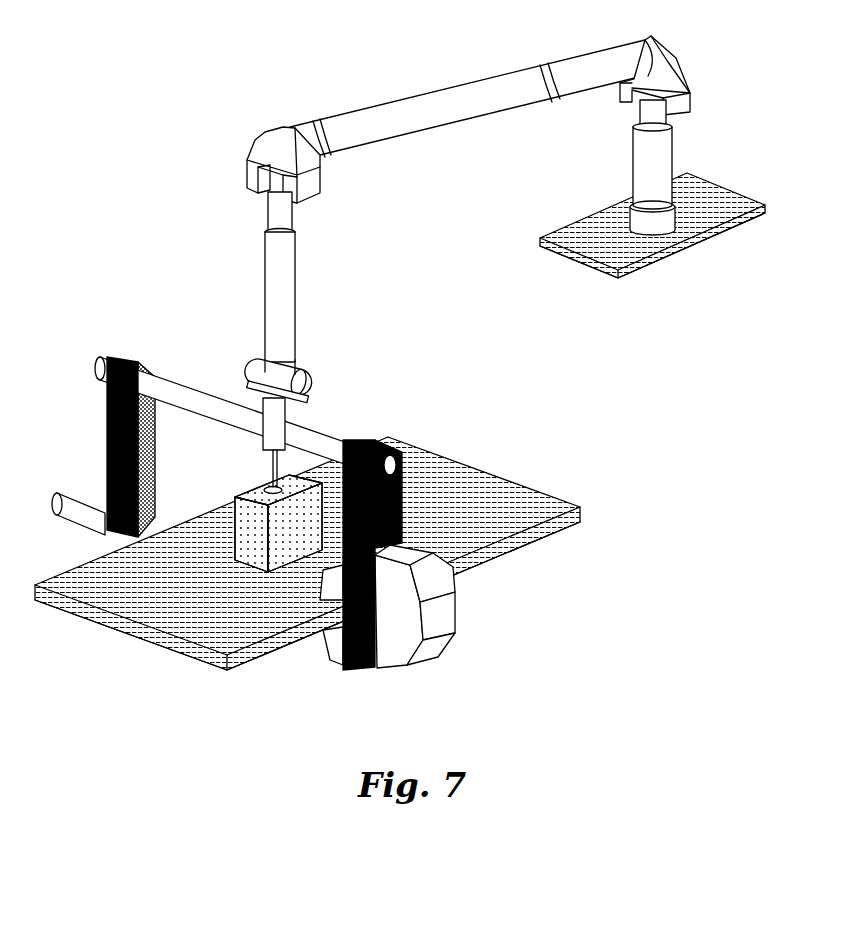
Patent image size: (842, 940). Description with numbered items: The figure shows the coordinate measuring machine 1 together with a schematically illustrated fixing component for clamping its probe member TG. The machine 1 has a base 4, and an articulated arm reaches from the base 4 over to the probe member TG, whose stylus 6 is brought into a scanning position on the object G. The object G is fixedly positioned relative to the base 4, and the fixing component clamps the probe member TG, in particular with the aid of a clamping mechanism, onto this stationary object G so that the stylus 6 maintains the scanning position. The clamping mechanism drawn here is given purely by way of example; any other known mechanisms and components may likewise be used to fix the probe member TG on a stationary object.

The coordinate measuring machine 1 is at (217, 114).
The base 4 is at (645, 177).
The stylus 6 is at (243, 486).
The object G is at (563, 533).
The probe member TG is at (273, 433).